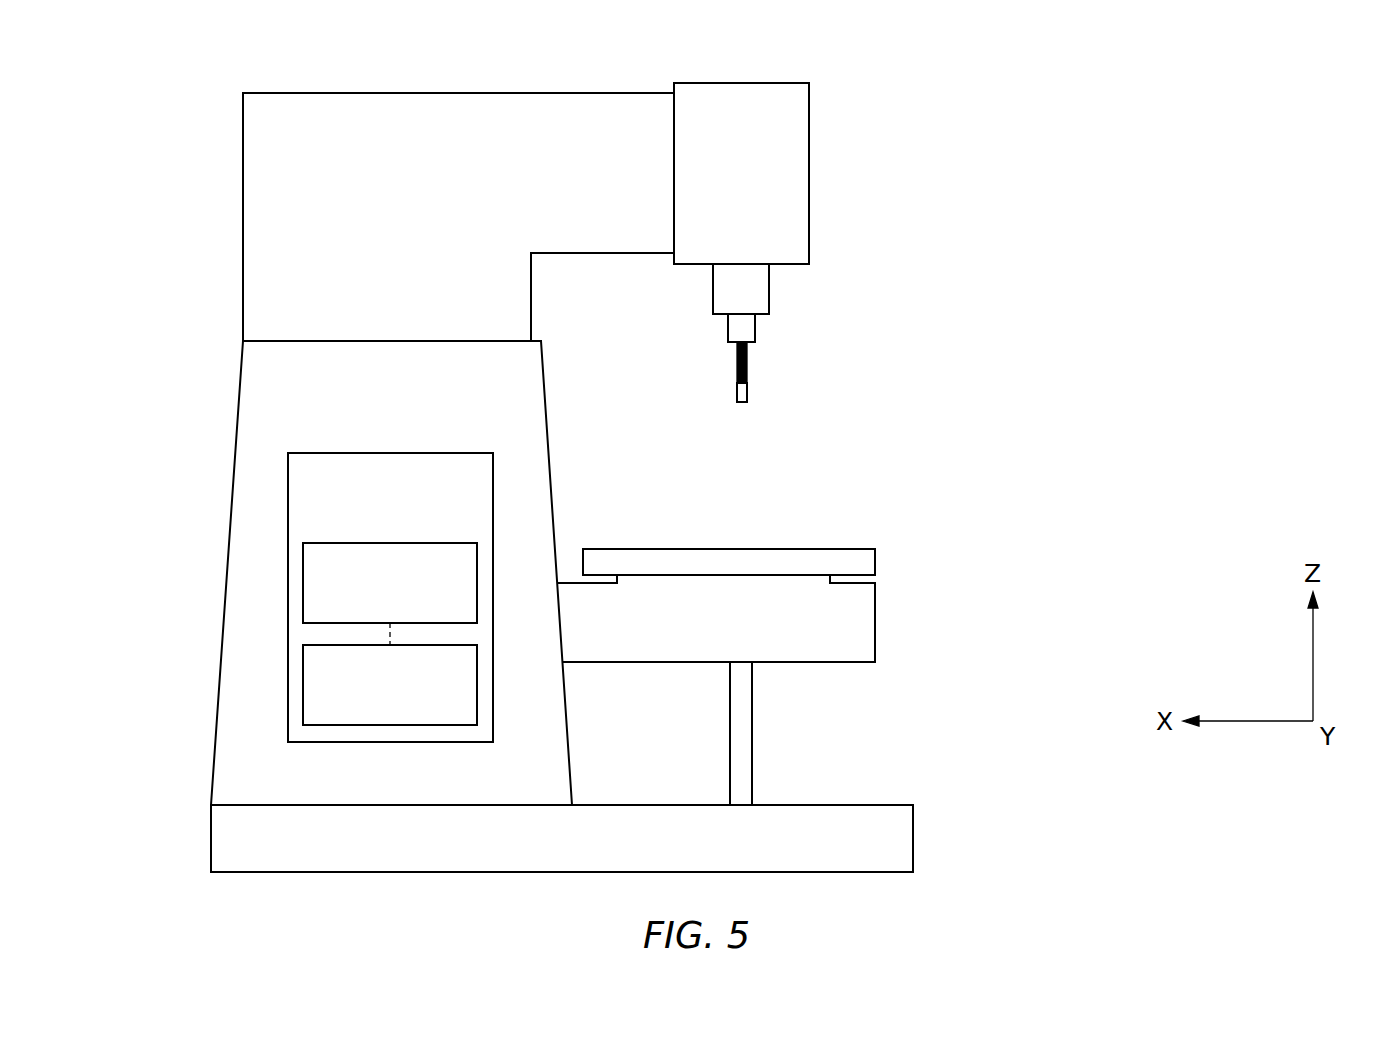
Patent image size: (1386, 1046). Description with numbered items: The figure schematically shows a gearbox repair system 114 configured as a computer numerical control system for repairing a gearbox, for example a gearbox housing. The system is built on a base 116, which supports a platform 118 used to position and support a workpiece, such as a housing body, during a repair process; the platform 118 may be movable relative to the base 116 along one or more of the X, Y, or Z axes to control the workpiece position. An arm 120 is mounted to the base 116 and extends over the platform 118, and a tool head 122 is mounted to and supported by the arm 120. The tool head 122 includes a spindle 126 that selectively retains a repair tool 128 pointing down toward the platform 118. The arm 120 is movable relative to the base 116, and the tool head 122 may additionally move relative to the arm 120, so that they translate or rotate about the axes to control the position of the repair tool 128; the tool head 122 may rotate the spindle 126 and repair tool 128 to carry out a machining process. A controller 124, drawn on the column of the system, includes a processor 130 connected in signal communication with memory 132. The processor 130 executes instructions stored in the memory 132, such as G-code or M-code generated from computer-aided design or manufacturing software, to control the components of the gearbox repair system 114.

The gearbox repair system 114 is at (1085, 133).
The base 116 is at (818, 825).
The platform 118 is at (833, 563).
The arm 120 is at (415, 117).
The tool head 122 is at (789, 163).
The controller 124 is at (288, 548).
The spindle 126 is at (740, 328).
The repair tool 128 is at (747, 365).
The processor 130 is at (303, 595).
The memory 132 is at (303, 697).